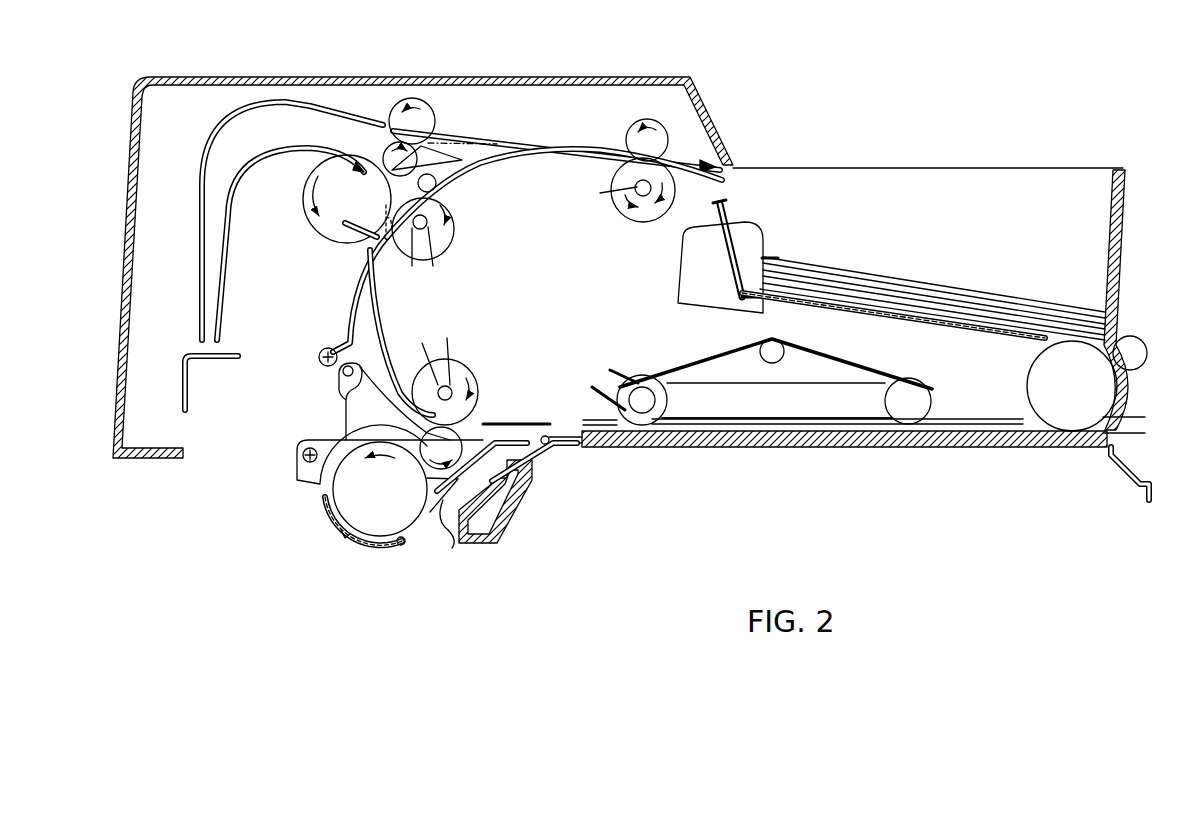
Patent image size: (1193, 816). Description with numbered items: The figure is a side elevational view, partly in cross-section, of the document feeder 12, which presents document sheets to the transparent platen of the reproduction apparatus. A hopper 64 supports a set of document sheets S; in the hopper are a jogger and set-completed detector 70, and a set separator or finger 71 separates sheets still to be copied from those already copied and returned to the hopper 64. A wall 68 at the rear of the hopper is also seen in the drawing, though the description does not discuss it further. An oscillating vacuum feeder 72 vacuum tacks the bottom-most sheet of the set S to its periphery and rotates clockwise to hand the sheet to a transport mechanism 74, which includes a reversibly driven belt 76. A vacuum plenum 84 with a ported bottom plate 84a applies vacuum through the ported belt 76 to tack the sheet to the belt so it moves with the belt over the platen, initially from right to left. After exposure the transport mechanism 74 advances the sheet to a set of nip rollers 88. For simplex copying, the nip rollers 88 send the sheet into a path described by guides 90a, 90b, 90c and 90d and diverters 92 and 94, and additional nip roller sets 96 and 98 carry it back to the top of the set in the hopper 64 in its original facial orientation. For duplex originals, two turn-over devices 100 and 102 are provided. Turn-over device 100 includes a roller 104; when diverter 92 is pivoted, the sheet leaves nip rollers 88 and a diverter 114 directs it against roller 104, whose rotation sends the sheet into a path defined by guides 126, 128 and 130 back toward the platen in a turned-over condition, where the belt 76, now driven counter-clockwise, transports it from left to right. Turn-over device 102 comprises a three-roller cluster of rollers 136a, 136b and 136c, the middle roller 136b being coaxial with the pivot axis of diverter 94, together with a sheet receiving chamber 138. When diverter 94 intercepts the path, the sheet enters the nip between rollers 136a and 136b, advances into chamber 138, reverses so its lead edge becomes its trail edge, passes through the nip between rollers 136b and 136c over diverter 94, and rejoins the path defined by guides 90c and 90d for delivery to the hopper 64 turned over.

The document feeder 12 is at (1100, 110).
The hopper 64 is at (732, 213).
The rear wall 68 is at (1112, 212).
The jogger and set-completed detector 70 is at (763, 247).
The set separator or finger 71 is at (778, 258).
The oscillating vacuum feeder 72 is at (1061, 397).
The transport mechanism 74 is at (872, 362).
The reversibly driven belt 76 is at (707, 357).
The vacuum plenum 84 is at (777, 382).
The ported bottom plate 84a is at (765, 420).
The nip rollers 88 is at (480, 393).
The guide 90a is at (377, 363).
The guide 90b is at (347, 278).
The guide 90c is at (513, 162).
The guide 90d is at (562, 143).
The diverter 92 is at (350, 400).
The diverter 94 is at (440, 152).
The nip roller set 96 is at (455, 227).
The nip roller set 98 is at (615, 205).
The turn-over device 100 is at (320, 498).
The turn-over device 102 is at (218, 132).
The roller 104 is at (328, 478).
The diverter 114 is at (295, 457).
The guide 126 is at (442, 510).
The guide 128 is at (503, 503).
The guide 130 is at (517, 425).
The roller 136a is at (313, 232).
The middle roller 136b is at (387, 147).
The roller 136c is at (428, 112).
The sheet receiving chamber 138 is at (255, 165).
The set of document sheets S is at (925, 285).